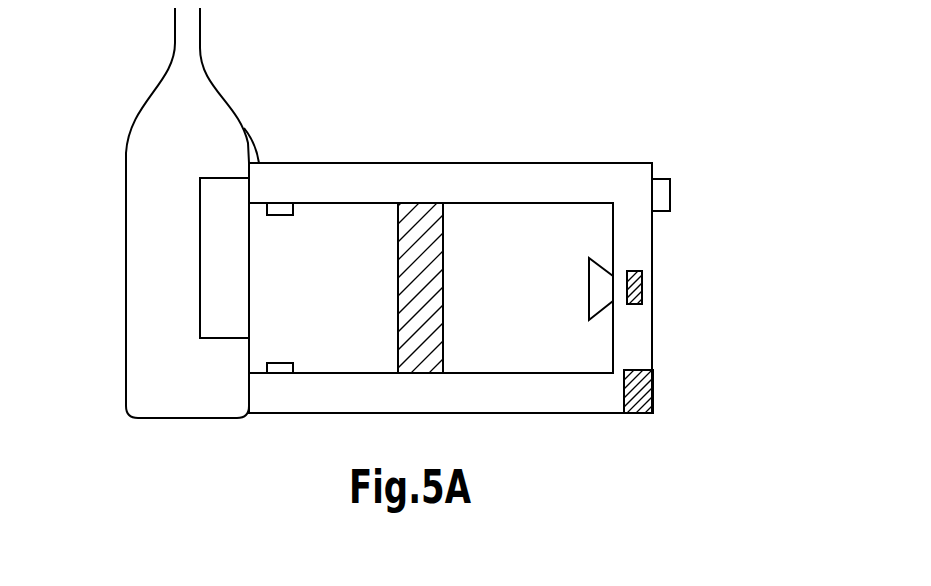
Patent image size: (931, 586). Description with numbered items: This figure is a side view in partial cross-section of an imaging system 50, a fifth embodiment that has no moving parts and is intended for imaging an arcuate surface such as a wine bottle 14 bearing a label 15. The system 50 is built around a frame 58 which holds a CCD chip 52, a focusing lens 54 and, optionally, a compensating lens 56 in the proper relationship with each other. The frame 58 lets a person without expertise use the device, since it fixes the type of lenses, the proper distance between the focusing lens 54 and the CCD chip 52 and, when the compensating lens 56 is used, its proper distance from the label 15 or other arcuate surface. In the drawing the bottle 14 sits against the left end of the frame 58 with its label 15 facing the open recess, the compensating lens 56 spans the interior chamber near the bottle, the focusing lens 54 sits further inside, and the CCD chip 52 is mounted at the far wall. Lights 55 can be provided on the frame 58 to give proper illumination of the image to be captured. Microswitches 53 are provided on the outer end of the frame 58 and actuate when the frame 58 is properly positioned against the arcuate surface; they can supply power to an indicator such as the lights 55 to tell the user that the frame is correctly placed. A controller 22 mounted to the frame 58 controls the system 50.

The bottle 14 is at (194, 115).
The label 15 is at (227, 270).
The imaging system 50 is at (474, 120).
The lights 55 is at (450, 253).
The frame 58 is at (585, 178).
The compensating lens 56 is at (397, 288).
The focusing lens 54 is at (588, 285).
The microswitches 53 is at (660, 193).
The CCD chip 52 is at (641, 284).
The controller 22 is at (632, 392).